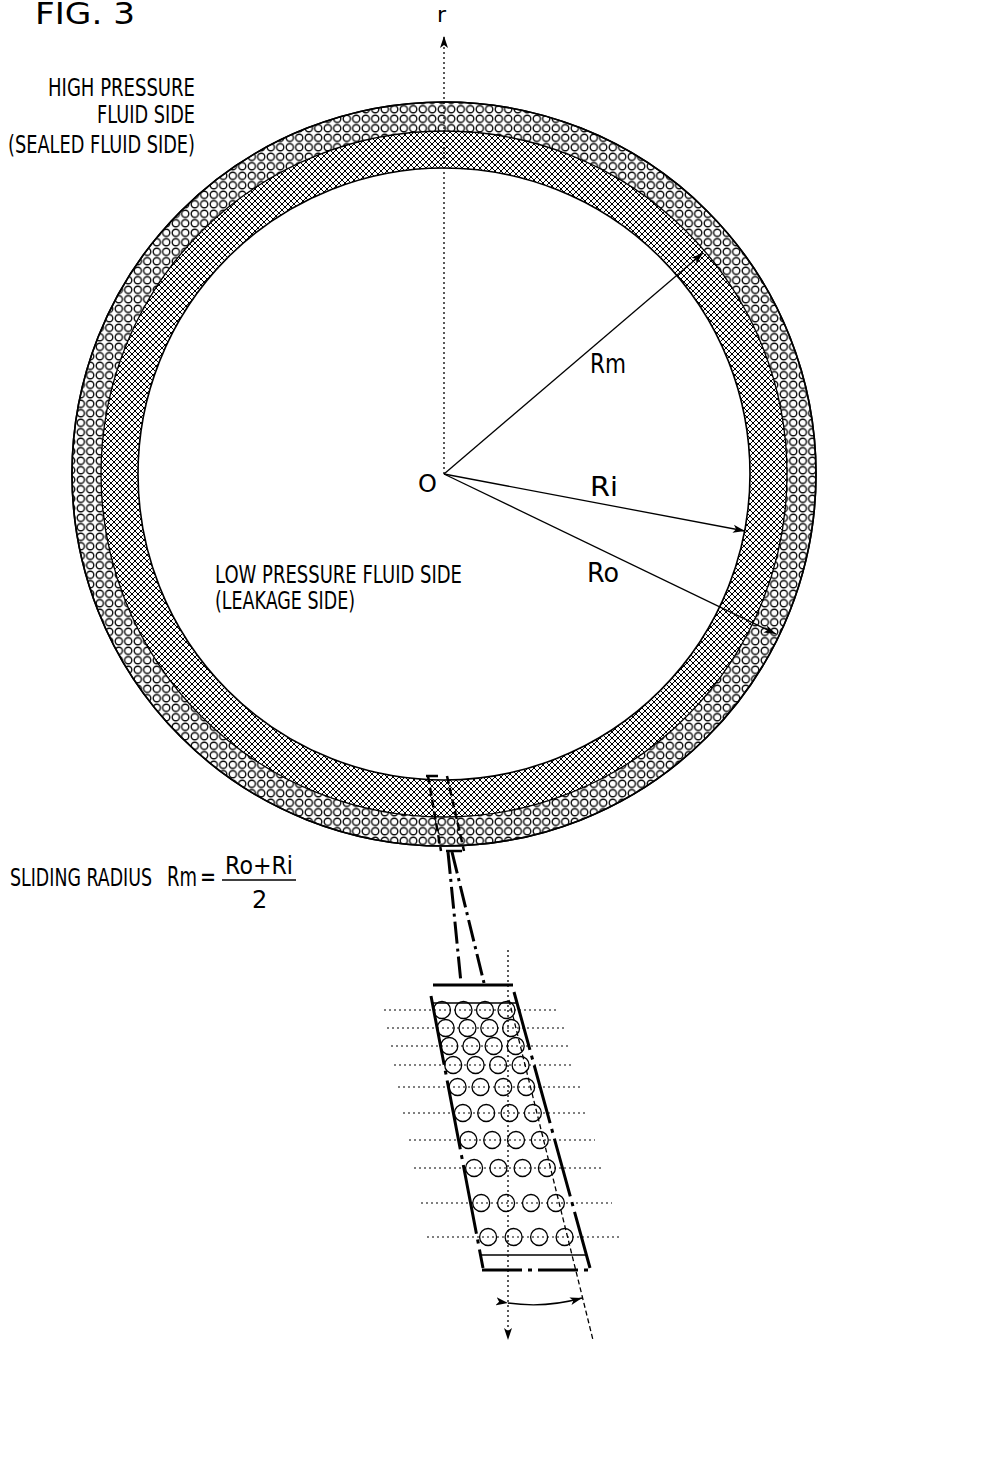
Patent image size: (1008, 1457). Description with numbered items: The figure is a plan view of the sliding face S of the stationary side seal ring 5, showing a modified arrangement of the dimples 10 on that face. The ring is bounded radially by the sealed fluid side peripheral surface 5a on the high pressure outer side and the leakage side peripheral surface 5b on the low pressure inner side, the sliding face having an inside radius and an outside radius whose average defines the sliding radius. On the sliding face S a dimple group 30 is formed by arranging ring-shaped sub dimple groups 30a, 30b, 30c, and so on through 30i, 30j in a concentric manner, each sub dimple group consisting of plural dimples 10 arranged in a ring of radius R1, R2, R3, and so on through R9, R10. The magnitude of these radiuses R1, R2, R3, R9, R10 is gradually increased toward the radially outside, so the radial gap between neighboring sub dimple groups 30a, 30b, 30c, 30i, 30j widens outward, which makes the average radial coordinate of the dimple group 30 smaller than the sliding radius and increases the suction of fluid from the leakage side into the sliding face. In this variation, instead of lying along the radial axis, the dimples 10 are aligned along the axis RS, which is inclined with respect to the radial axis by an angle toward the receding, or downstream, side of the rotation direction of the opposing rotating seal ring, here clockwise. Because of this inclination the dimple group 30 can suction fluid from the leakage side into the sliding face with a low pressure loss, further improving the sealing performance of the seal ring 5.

The stationary side seal ring 5 is at (713, 124).
The sealed fluid side peripheral surface 5a is at (583, 127).
The leakage side peripheral surface 5b is at (578, 204).
The dimple 10 is at (697, 730).
The dimple group 30 is at (540, 1161).
The sub dimple group 30a is at (517, 998).
The sub dimple group 30b is at (531, 1027).
The sub dimple group 30c is at (534, 1052).
The sub dimple group 30i is at (574, 1206).
The sub dimple group 30j is at (580, 1237).
The radius of sub dimple group R1 is at (392, 1005).
The radius of sub dimple group R2 is at (388, 1020).
The radius of sub dimple group R3 is at (380, 1040).
The radius of sub dimple group R9 is at (418, 1200).
The radius of sub dimple group R10 is at (424, 1237).
The sliding face S is at (162, 221).
The inclined axis RS is at (596, 1318).